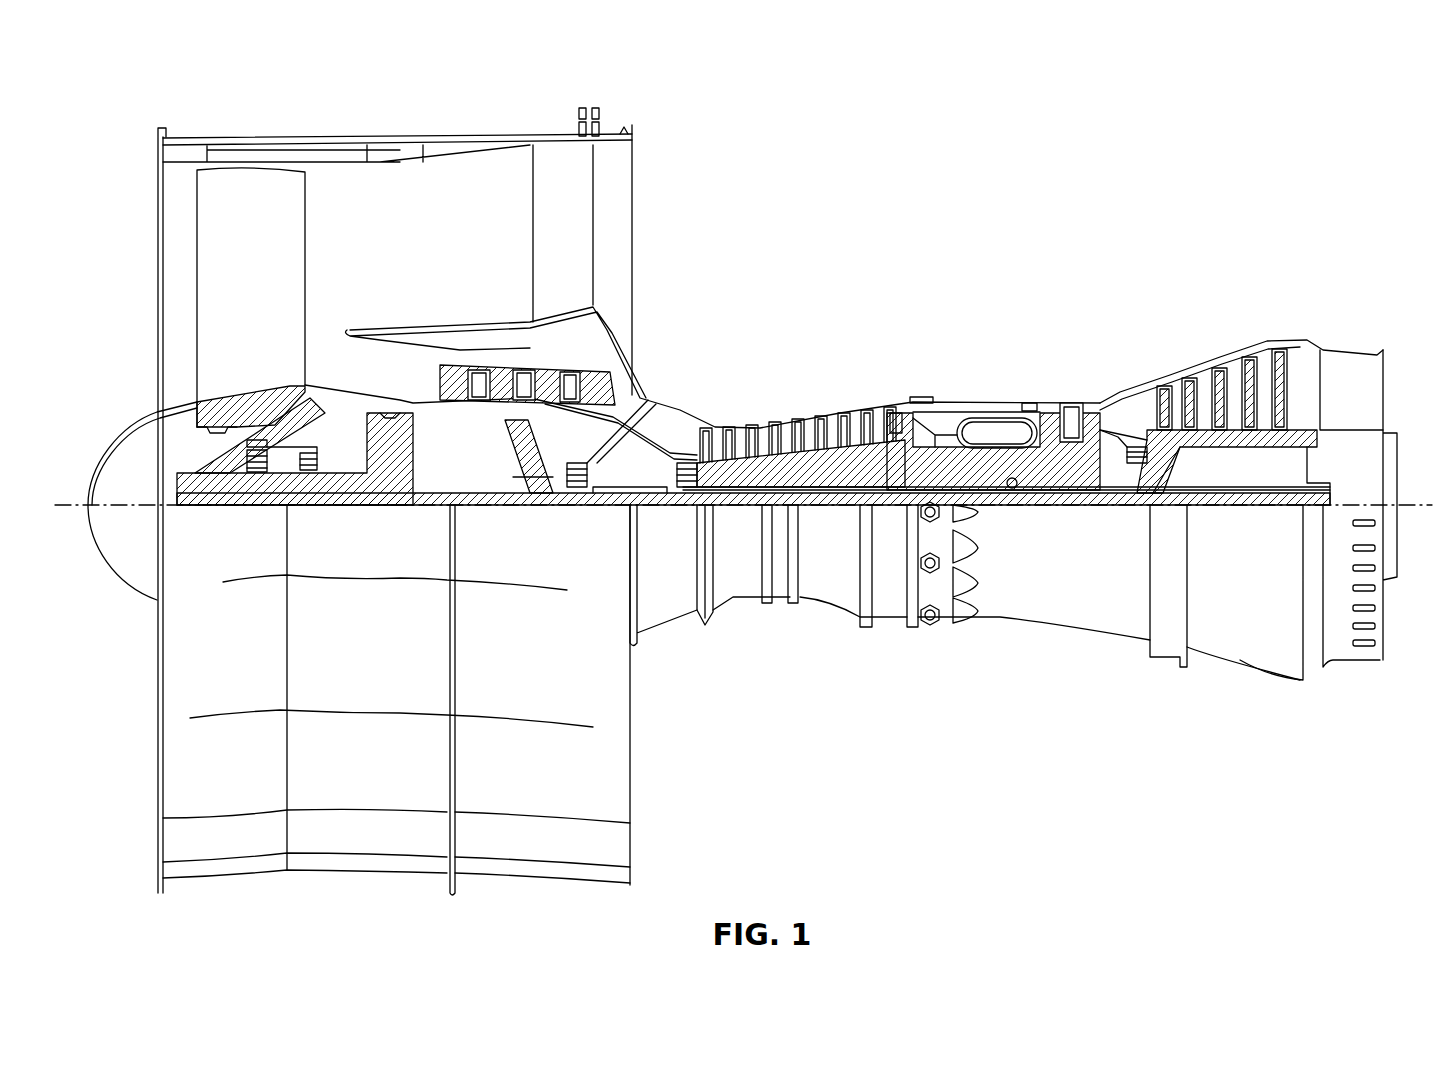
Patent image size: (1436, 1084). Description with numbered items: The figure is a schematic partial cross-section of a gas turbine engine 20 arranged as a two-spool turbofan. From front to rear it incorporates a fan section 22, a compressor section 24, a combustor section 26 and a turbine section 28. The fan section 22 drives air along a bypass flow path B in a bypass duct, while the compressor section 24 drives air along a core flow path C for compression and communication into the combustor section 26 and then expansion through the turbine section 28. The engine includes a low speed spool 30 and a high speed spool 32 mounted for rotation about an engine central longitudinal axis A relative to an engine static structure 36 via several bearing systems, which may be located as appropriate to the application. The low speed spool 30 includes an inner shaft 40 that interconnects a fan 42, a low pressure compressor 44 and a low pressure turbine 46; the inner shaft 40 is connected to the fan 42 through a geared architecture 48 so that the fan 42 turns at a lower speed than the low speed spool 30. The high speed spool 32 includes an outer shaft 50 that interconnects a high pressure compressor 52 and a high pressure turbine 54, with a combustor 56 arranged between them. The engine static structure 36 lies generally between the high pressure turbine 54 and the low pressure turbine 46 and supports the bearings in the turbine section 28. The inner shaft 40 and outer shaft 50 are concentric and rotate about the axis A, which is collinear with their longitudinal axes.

The gas turbine engine 20 is at (1208, 173).
The fan section 22 is at (265, 129).
The compressor section 24 is at (1006, 391).
The combustor section 26 is at (993, 423).
The turbine section 28 is at (1241, 390).
The low speed spool 30 is at (850, 509).
The high speed spool 32 is at (905, 452).
The engine static structure 36 is at (892, 627).
The inner shaft 40 is at (645, 507).
The fan 42 is at (277, 268).
The low pressure compressor 44 is at (552, 383).
The low pressure turbine 46 is at (1238, 360).
The geared architecture 48 is at (395, 482).
The outer shaft 50 is at (1010, 490).
The high pressure compressor 52 is at (812, 470).
The high pressure turbine 54 is at (1075, 402).
The combustor 56 is at (996, 422).
The engine central longitudinal axis A is at (1403, 502).
The bypass flow path B is at (478, 232).
The core flow path C is at (338, 365).